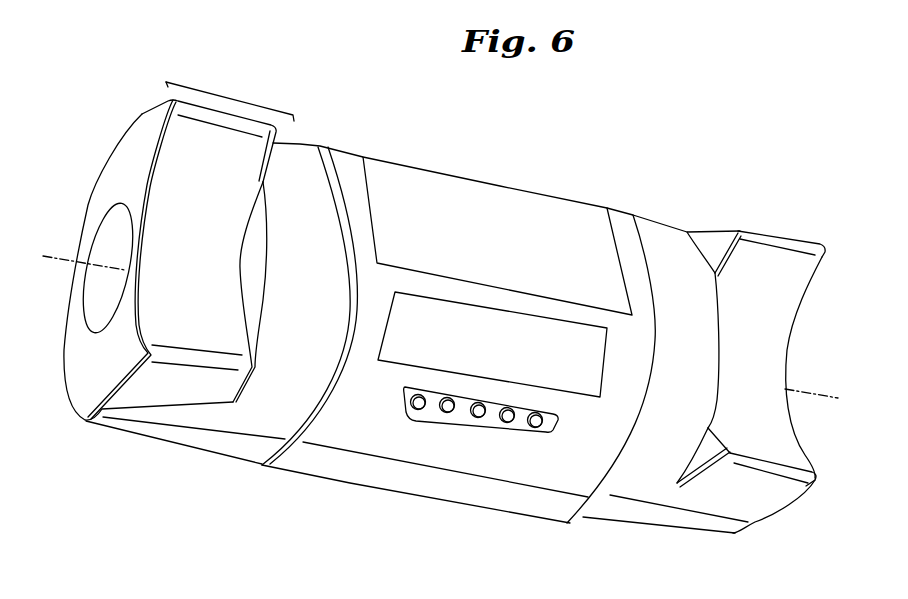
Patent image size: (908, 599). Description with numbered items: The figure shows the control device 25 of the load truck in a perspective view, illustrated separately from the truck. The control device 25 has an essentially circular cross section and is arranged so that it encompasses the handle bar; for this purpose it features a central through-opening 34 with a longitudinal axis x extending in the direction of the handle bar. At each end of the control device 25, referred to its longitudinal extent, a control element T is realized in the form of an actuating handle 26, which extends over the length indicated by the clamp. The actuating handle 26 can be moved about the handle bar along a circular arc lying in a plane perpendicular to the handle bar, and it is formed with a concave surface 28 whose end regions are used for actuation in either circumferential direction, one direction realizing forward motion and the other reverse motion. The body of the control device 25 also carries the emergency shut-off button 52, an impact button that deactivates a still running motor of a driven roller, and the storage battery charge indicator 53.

The control device 25 is at (615, 170).
The actuating handle 26 is at (243, 80).
The concave surface 28 is at (165, 293).
The central through-opening 34 is at (113, 232).
The emergency shut-off button 52 is at (507, 213).
The storage battery charge indicator 53 is at (462, 408).
The control element T is at (140, 108).
The longitudinal axis x is at (439, 327).